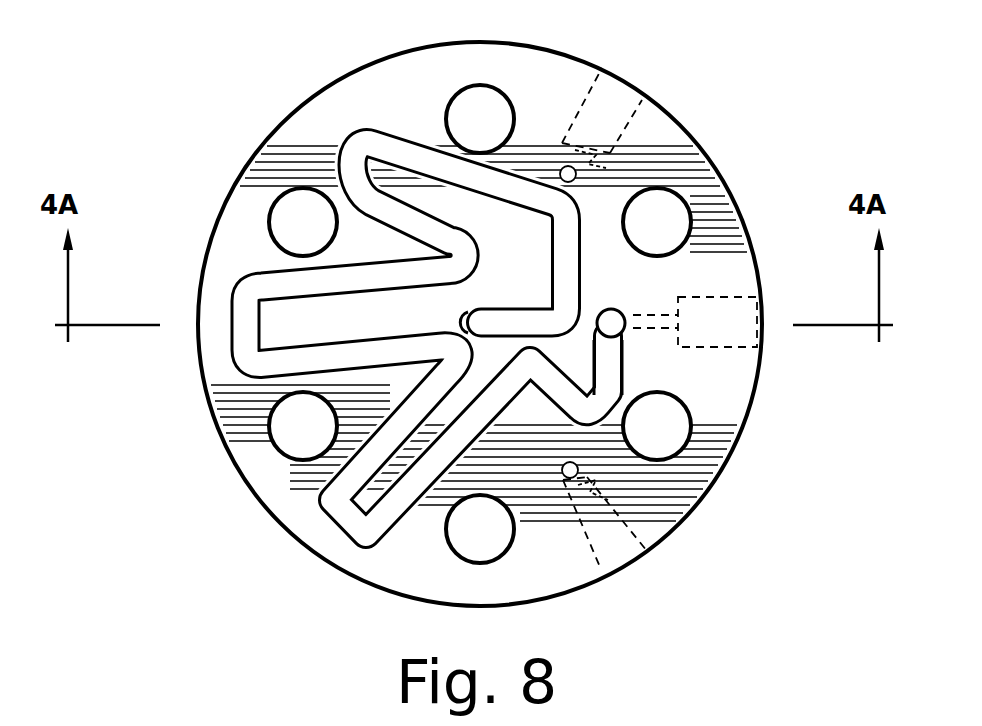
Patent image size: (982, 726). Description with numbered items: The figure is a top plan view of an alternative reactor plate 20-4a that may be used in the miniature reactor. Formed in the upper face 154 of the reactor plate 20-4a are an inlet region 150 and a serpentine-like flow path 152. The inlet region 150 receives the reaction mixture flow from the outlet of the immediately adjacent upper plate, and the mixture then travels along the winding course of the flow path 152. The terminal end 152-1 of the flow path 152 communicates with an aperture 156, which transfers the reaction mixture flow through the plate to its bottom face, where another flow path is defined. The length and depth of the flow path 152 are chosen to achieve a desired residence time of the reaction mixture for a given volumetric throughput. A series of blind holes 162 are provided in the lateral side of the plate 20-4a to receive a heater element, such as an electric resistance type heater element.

The inlet region 150 is at (468, 320).
The serpentine-like flow path 152 is at (284, 290).
The terminal end 152-1 is at (616, 354).
The upper face 154 is at (426, 112).
The aperture 156 is at (602, 312).
The blind holes 162 is at (622, 66).
The reactor plate 20-4a is at (190, 508).